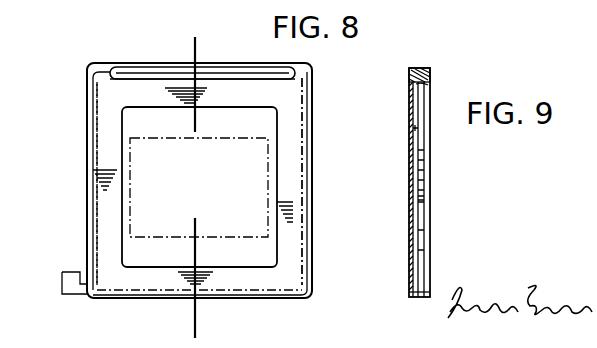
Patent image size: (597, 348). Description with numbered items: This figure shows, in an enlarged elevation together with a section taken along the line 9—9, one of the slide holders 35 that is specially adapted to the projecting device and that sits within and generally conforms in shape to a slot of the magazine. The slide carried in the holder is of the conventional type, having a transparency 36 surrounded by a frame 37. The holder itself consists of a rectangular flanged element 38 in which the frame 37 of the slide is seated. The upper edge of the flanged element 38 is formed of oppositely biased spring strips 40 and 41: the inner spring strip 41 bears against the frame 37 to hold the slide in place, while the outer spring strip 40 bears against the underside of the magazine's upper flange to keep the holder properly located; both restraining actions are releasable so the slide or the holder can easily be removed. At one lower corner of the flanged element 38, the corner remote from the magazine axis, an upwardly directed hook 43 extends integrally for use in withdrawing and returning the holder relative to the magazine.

In FIG. 8, the section line 9 is at (175, 53).
In FIG. 8, the slide holder 35 is at (316, 197).
In FIG. 9, the slide holder 35 is at (435, 178).
In FIG. 8, the transparency 36 is at (254, 178).
In FIG. 9, the transparency 36 is at (432, 198).
In FIG. 8, the frame 37 is at (298, 249).
In FIG. 9, the frame 37 is at (418, 128).
In FIG. 8, the rectangular flanged element 38 is at (312, 126).
In FIG. 9, the rectangular flanged element 38 is at (409, 279).
In FIG. 8, the outer spring strip 40 is at (252, 63).
In FIG. 9, the outer spring strip 40 is at (424, 64).
In FIG. 8, the inner spring strip 41 is at (254, 88).
In FIG. 9, the inner spring strip 41 is at (424, 88).
In FIG. 8, the hook 43 is at (65, 272).